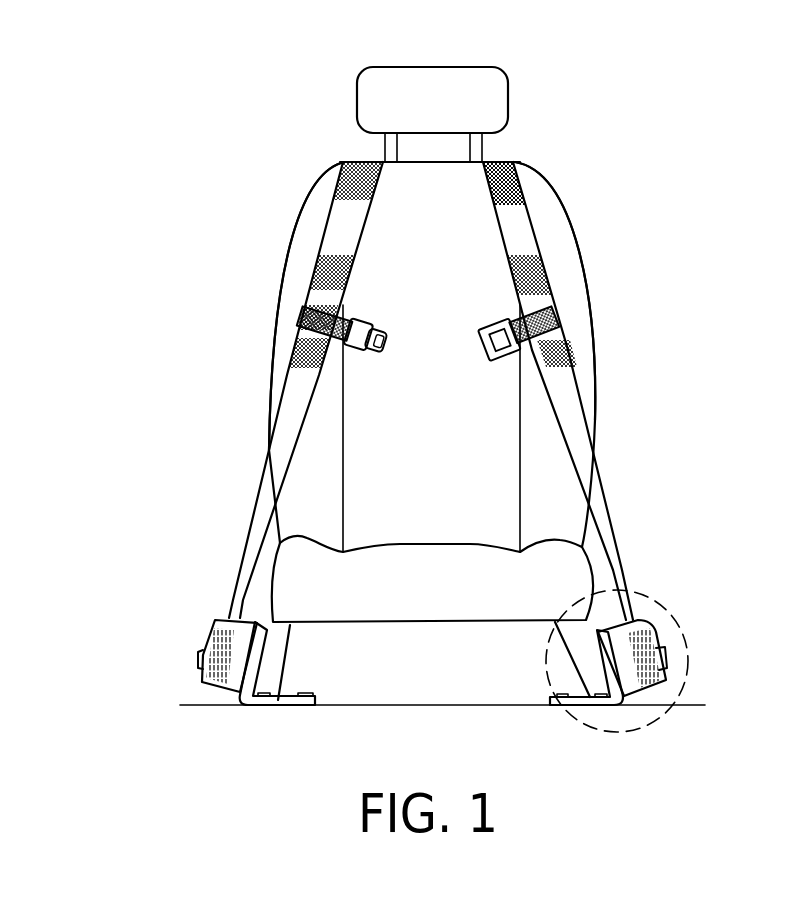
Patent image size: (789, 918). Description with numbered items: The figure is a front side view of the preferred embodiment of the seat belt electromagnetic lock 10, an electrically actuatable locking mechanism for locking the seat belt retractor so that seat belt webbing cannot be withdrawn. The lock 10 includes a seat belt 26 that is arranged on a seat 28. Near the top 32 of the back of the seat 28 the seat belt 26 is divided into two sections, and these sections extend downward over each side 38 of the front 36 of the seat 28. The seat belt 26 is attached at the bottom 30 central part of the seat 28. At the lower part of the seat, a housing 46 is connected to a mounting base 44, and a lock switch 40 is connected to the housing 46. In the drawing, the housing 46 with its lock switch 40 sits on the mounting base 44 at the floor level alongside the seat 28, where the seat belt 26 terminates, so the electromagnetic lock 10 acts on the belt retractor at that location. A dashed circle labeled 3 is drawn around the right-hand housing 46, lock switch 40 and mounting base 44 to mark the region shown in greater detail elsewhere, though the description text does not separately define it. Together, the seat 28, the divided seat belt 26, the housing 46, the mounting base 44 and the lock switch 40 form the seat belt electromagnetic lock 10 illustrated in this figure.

The seat belt electromagnetic lock 10 is at (439, 351).
The seat belt 26 is at (343, 227).
The seat 28 is at (553, 248).
The bottom 30 is at (452, 703).
The top 32 is at (527, 163).
The front 36 is at (385, 458).
The side 38 is at (272, 305).
The lock switch 40 is at (431, 665).
The mounting base 44 is at (281, 708).
The housing 46 is at (200, 665).
The detail area shown in FIG. 3 is at (665, 612).